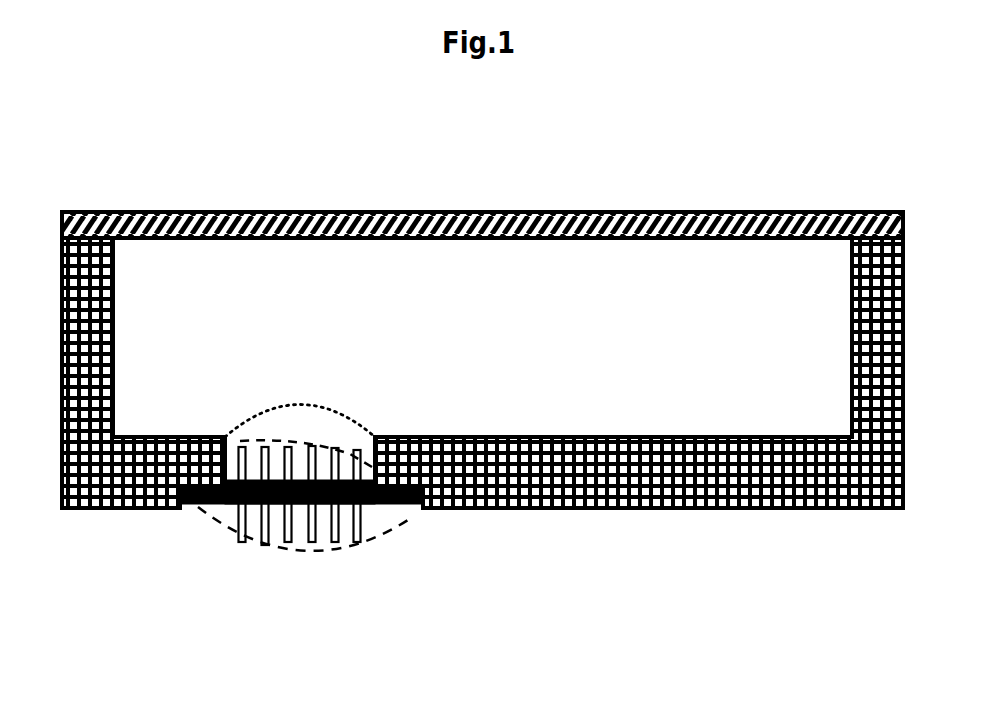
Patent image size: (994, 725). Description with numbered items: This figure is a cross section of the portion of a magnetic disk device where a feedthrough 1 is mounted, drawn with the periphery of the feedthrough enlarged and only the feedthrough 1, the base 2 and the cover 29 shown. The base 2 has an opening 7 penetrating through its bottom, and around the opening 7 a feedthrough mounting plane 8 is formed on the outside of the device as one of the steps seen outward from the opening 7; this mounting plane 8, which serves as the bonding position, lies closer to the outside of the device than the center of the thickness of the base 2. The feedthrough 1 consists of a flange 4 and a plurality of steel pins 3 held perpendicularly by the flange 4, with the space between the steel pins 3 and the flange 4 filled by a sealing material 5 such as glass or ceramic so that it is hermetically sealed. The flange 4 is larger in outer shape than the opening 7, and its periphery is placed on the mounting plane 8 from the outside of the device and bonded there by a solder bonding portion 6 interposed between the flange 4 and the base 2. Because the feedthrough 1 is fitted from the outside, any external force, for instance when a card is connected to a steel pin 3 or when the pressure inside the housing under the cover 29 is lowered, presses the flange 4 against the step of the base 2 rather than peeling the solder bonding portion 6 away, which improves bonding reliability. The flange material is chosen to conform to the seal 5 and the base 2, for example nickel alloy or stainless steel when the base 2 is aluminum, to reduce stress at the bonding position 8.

The feedthrough 1 is at (333, 553).
The base 2 is at (642, 438).
The steel pin 3 is at (357, 545).
The flange 4 is at (196, 500).
The sealing material 5 is at (308, 540).
The solder bonding portion 6 is at (396, 498).
The opening 7 is at (342, 413).
The feedthrough mounting plane 8 is at (214, 452).
The cover 29 is at (590, 212).